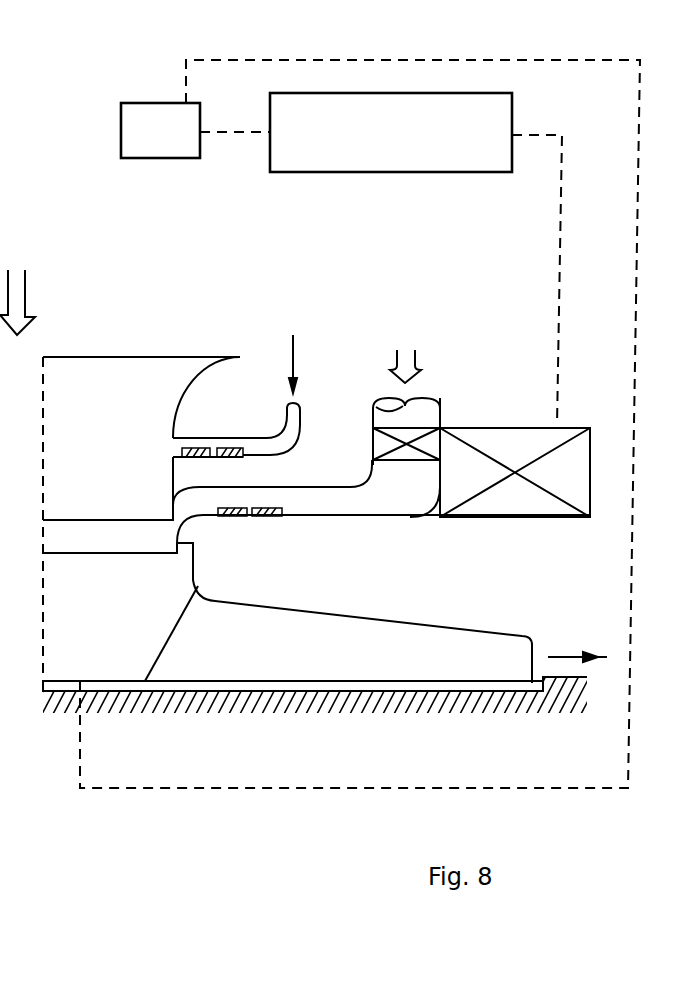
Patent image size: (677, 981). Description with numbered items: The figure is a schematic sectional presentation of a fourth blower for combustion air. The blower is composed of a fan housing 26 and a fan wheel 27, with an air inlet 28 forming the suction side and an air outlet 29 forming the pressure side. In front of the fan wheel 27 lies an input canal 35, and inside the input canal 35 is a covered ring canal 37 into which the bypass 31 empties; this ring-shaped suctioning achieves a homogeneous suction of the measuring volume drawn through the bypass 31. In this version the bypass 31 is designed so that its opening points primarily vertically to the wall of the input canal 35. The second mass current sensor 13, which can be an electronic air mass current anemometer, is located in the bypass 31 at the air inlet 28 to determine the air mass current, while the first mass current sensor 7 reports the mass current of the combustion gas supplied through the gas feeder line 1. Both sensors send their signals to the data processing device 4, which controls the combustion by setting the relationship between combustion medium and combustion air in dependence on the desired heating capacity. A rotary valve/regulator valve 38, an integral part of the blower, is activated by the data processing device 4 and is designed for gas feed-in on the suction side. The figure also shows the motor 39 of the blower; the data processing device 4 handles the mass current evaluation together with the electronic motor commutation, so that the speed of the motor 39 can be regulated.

The gas feeder line 1 is at (378, 418).
The data processing device 4 is at (348, 172).
The first mass current sensor 7 is at (250, 522).
The second mass current sensor 13 is at (216, 438).
The fan housing 26 is at (432, 705).
The fan wheel 27 is at (407, 635).
The air inlet 28 is at (70, 348).
The air outlet 29 is at (573, 645).
The bypass 31 is at (173, 440).
The input canal 35 is at (207, 483).
The covered ring canal 37 is at (17, 382).
The rotary valve/regulator valve 38 is at (512, 437).
The motor 39 is at (152, 158).